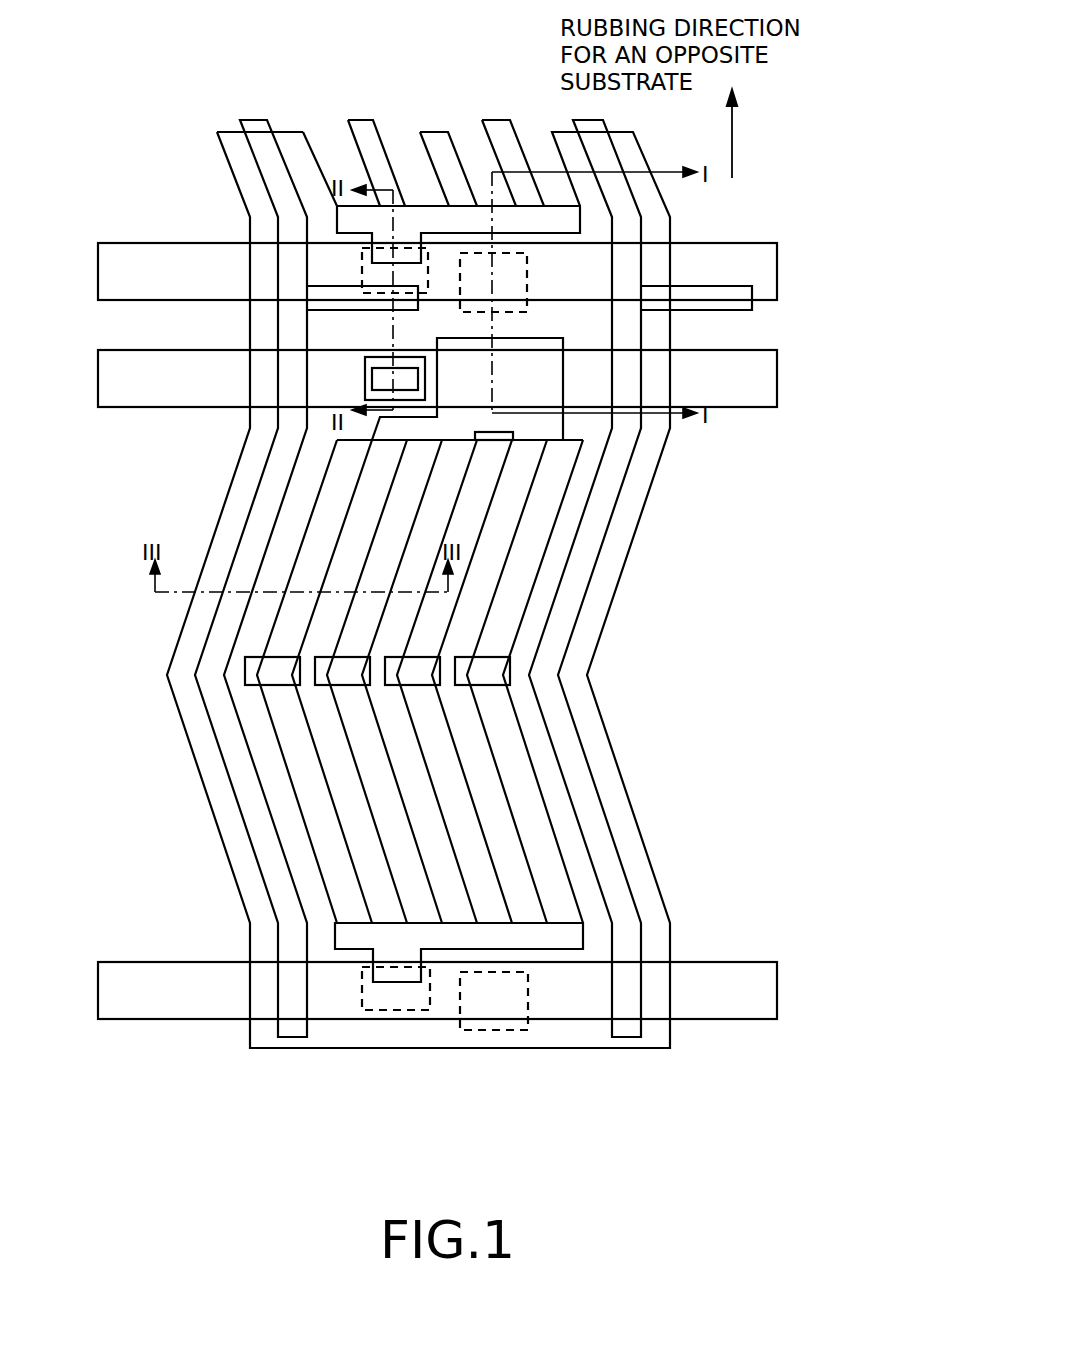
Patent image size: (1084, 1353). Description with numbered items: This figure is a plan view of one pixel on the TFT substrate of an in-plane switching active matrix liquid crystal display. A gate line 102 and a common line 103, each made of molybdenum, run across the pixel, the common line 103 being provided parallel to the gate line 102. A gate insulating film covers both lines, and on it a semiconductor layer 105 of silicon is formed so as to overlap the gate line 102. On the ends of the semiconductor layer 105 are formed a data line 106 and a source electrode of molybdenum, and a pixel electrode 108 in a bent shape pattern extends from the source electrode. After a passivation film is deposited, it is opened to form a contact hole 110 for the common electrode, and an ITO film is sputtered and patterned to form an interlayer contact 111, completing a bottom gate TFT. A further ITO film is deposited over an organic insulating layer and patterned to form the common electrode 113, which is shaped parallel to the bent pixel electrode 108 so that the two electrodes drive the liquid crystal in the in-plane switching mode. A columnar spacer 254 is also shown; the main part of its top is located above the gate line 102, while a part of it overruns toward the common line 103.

The gate line 102 is at (777, 272).
The common line 103 is at (777, 380).
The semiconductor layer 105 is at (362, 270).
The data line 106 is at (253, 502).
The pixel electrode 108 is at (526, 850).
The contact hole 110 is at (378, 370).
The interlayer contact 111 is at (367, 374).
The common electrode 113 is at (194, 762).
The columnar spacer 254 is at (527, 284).